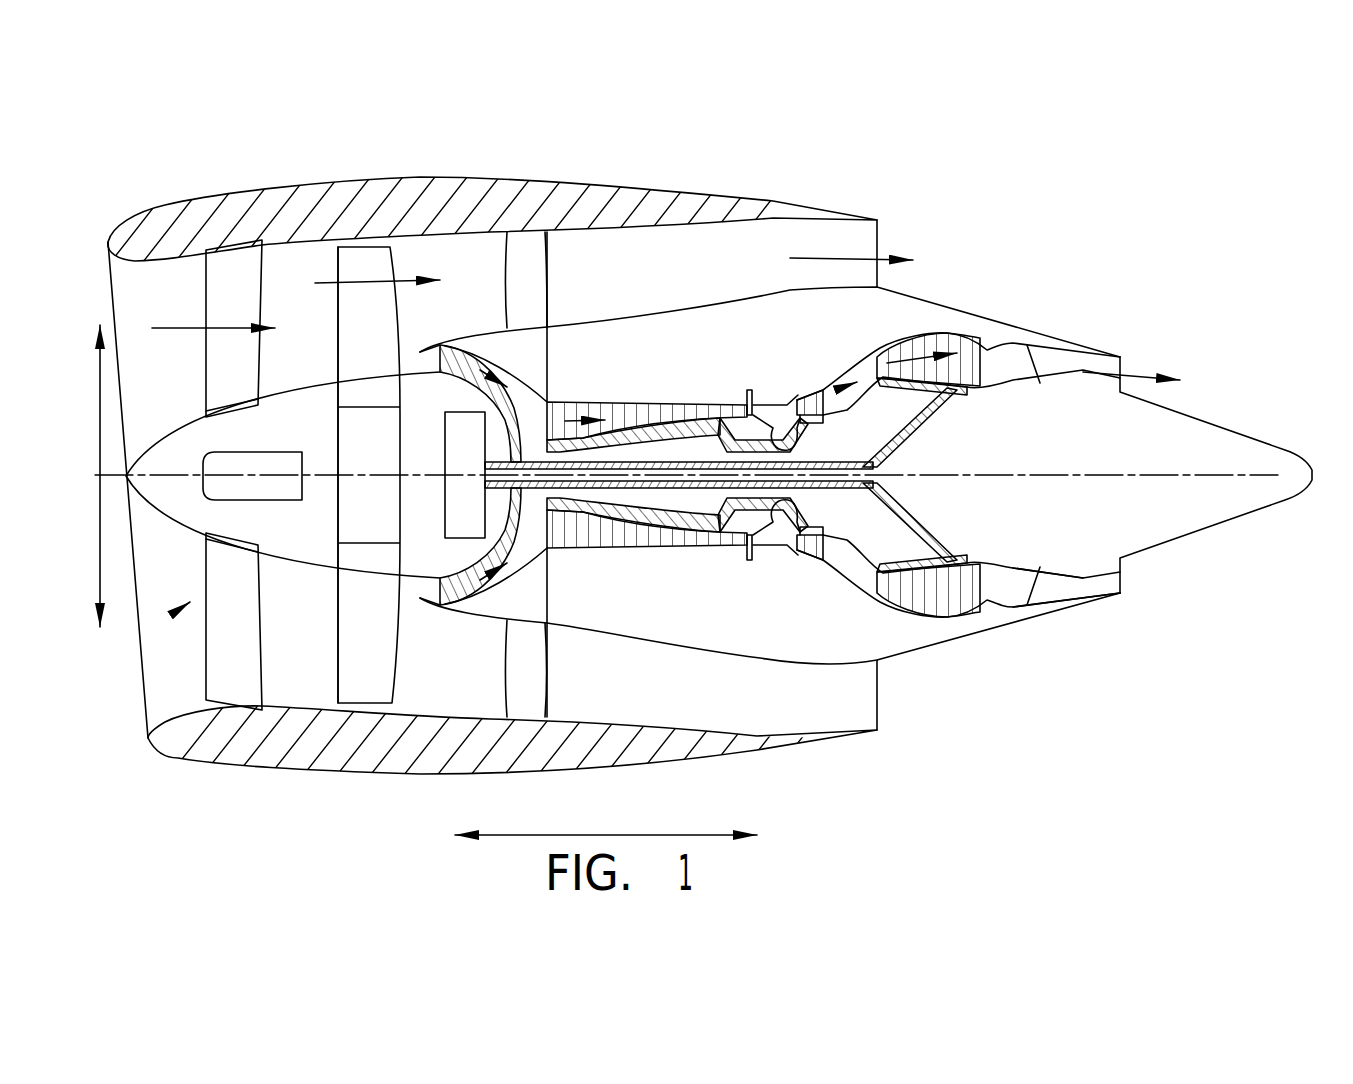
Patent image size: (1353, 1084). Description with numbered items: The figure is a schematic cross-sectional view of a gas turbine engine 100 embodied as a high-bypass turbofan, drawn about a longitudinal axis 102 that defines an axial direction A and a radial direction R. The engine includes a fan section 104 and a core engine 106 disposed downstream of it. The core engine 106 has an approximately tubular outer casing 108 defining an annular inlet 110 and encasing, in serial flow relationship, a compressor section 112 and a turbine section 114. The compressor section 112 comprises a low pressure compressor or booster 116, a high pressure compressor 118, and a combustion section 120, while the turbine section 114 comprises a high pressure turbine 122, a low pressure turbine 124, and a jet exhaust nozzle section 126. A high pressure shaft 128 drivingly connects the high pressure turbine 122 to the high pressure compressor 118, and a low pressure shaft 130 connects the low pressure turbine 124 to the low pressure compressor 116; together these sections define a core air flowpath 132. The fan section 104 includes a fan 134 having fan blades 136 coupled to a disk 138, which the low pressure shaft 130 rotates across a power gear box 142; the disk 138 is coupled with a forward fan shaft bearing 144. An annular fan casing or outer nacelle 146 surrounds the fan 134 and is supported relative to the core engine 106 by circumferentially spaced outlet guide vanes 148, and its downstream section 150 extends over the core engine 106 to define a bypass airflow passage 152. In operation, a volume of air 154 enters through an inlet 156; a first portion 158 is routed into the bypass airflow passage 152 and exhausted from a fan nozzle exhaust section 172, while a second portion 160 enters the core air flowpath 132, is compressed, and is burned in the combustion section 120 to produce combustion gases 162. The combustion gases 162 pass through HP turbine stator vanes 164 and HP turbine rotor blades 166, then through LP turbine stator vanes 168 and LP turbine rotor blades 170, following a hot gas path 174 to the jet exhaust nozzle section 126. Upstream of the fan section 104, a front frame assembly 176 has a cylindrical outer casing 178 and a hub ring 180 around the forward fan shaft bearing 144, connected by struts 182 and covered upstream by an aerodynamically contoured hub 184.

The gas turbine engine 100 is at (1033, 210).
The longitudinal axis 102 is at (1060, 470).
The fan section 104 is at (270, 283).
The core engine 106 is at (703, 383).
The outer casing 108 is at (723, 652).
The annular inlet 110 is at (447, 594).
The compressor section 112 is at (658, 550).
The turbine section 114 is at (933, 627).
The low pressure compressor 116 is at (500, 537).
The high pressure compressor 118 is at (582, 537).
The combustion section 120 is at (767, 543).
The high pressure turbine 122 is at (833, 550).
The low pressure turbine 124 is at (963, 613).
The jet exhaust nozzle section 126 is at (1027, 593).
The high pressure shaft 128 is at (800, 437).
The low pressure shaft 130 is at (845, 460).
The core air flowpath 132 is at (522, 562).
The fan 134 is at (407, 340).
The fan blades 136 is at (380, 657).
The disk 138 is at (348, 421).
The power gear box 142 is at (475, 427).
The forward fan shaft bearing 144 is at (230, 452).
The annular fan casing 146 is at (385, 771).
The outlet guide vanes 148 is at (547, 275).
The downstream section 150 is at (773, 201).
The bypass airflow passage 152 is at (709, 272).
The volume of air 154 is at (197, 328).
The inlet 156 is at (142, 718).
The first portion 158 is at (315, 283).
The second portion 160 is at (418, 360).
The combustion gases 162 is at (815, 392).
The HP turbine stator vanes 164 is at (787, 543).
The HP turbine rotor blades 166 is at (813, 525).
The LP turbine stator vanes 168 is at (885, 598).
The LP turbine rotor blades 170 is at (892, 625).
The fan nozzle exhaust section 172 is at (880, 240).
The hot gas path 174 is at (863, 362).
The front frame assembly 176 is at (175, 612).
The cylindrical outer casing 178 is at (237, 708).
The hub ring 180 is at (210, 547).
The struts 182 is at (230, 653).
The hub 184 is at (172, 427).
The radial direction R is at (126, 476).
The axial direction A is at (607, 835).